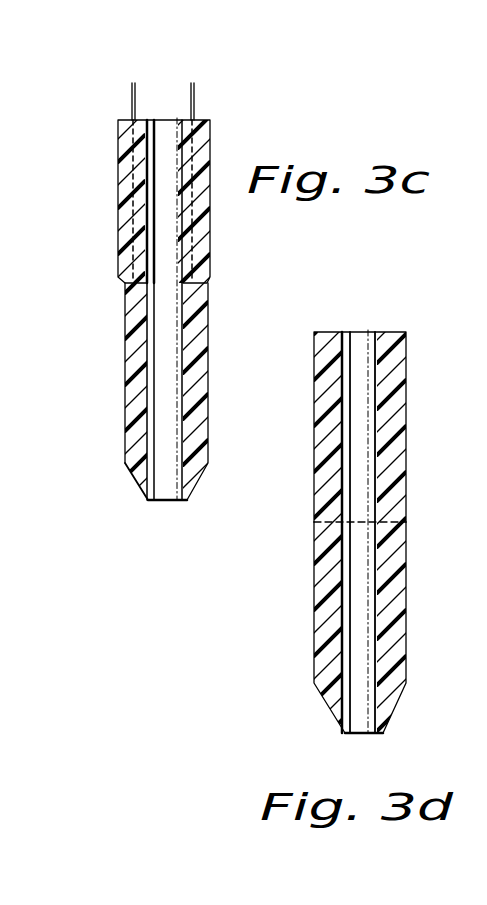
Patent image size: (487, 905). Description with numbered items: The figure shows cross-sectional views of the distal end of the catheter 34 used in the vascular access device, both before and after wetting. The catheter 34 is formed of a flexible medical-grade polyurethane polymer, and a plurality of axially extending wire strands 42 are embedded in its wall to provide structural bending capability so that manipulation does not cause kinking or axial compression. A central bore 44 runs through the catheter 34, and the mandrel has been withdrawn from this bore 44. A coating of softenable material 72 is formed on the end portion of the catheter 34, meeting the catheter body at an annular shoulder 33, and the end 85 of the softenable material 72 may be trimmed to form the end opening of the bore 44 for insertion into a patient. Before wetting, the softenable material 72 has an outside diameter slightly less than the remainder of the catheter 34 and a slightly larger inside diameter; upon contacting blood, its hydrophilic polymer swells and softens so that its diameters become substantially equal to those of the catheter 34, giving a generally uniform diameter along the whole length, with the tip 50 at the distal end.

In FIG. 3D, the annular shoulder 33 is at (322, 522).
In FIG. 3C, the catheter 34 is at (118, 213).
In FIG. 3D, the catheter 34 is at (315, 420).
In FIG. 3C, the wire strands 42 is at (191, 90).
In FIG. 3C, the bore 44 is at (172, 367).
In FIG. 3D, the bore 44 is at (357, 630).
In FIG. 3C, the distal tip 50 is at (178, 500).
In FIG. 3D, the distal tip 50 is at (355, 735).
In FIG. 3C, the softenable material 72 is at (132, 370).
In FIG. 3D, the softenable material 72 is at (322, 578).
In FIG. 3C, the end of the softenable material 85 is at (137, 485).